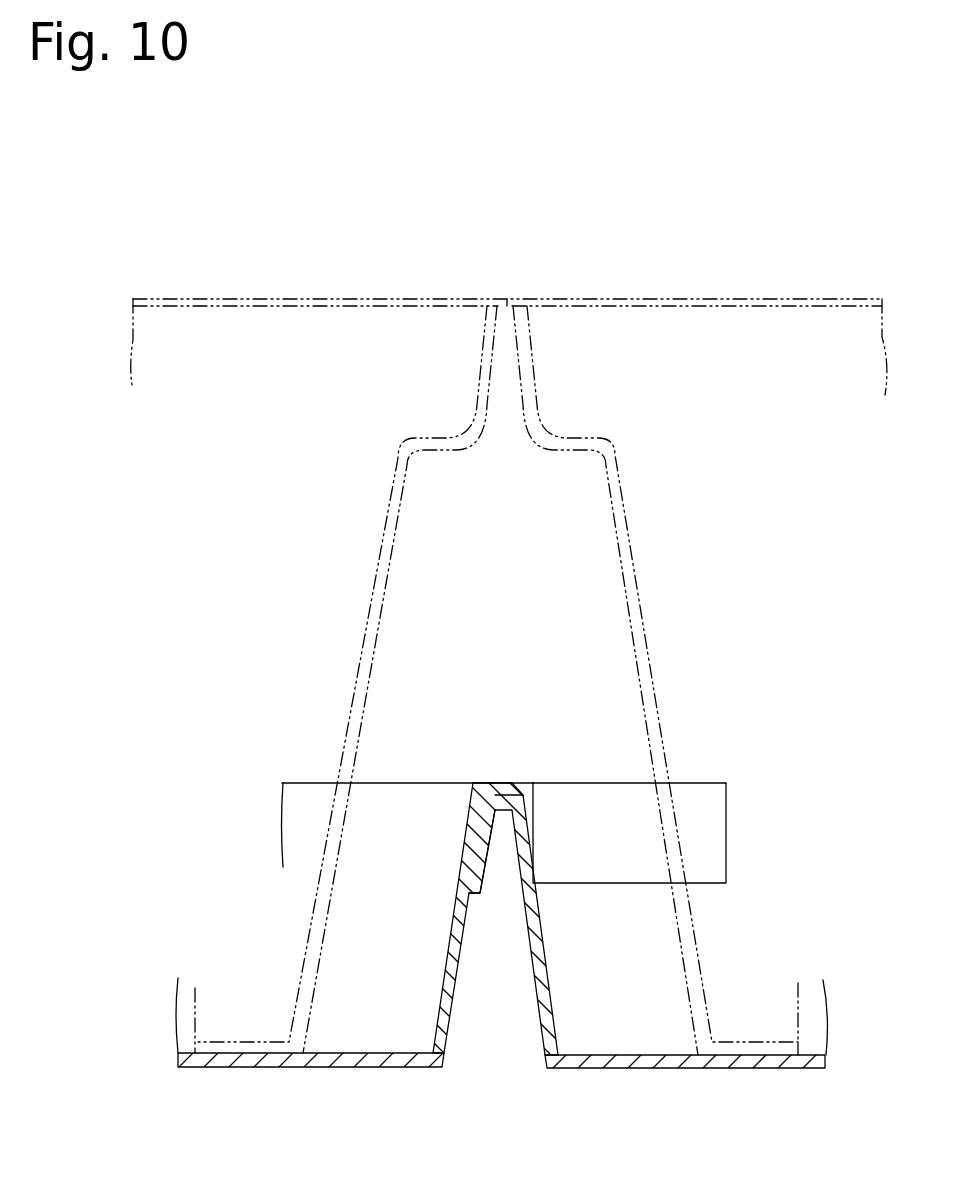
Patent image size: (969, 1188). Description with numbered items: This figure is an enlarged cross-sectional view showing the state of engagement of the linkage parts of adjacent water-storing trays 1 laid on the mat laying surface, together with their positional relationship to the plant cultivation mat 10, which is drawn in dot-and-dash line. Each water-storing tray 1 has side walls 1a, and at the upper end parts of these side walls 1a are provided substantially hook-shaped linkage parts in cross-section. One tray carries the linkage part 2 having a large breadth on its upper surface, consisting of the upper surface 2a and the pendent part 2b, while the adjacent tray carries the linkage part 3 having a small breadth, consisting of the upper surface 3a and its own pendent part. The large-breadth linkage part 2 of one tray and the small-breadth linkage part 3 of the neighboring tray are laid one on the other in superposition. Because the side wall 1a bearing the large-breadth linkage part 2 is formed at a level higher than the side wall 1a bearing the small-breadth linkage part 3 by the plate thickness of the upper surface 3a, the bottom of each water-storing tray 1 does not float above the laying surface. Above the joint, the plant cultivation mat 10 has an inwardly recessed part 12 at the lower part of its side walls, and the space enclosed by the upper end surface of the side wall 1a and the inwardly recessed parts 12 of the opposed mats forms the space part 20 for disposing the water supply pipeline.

The water-storing tray 1 is at (630, 1070).
The side wall 1a is at (303, 803).
The linkage part having a large breadth 2 is at (629, 779).
The upper surface 2a is at (628, 784).
The pendent part 2b is at (700, 788).
The linkage part having a small breadth 3 is at (494, 933).
The upper surface 3a is at (505, 803).
The plant cultivation mat 10 is at (365, 410).
The inwardly recessed part 12 is at (373, 667).
The space part 20 is at (526, 680).